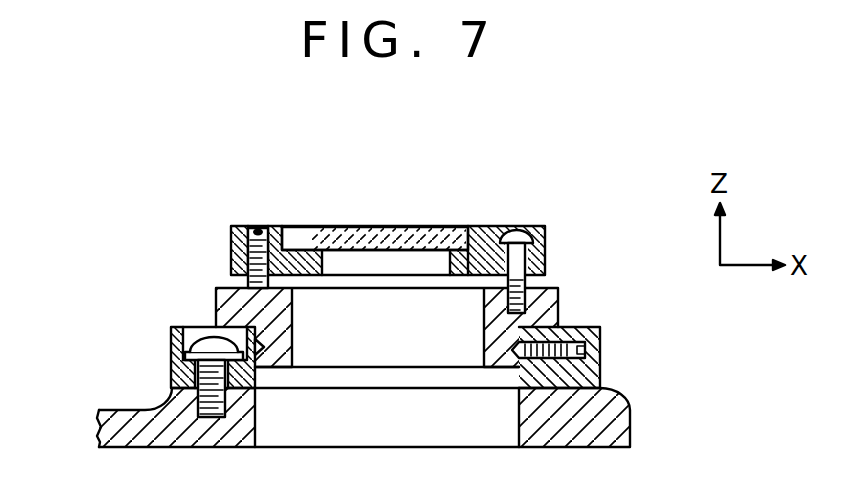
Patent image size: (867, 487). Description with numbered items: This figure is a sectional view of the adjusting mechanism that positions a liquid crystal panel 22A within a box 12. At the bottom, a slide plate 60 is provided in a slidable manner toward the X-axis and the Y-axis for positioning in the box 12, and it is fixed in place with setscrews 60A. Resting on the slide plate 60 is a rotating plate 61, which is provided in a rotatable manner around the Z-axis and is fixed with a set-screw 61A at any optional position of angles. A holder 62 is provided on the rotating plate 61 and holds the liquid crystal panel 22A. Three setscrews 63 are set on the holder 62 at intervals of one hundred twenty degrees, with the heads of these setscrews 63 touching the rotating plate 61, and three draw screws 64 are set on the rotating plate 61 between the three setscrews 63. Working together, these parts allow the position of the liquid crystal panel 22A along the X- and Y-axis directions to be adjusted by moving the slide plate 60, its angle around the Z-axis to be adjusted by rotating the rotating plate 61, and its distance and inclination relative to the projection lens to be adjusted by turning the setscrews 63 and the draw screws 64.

The box 12 is at (607, 410).
The slide plate 60 is at (170, 342).
The setscrew 60A is at (200, 335).
The rotating plate 61 is at (558, 298).
The set-screw 61A is at (583, 352).
The holder 62 is at (485, 228).
The liquid crystal panel 22A is at (377, 228).
The setscrew 63 is at (260, 228).
The draw screw 64 is at (520, 228).